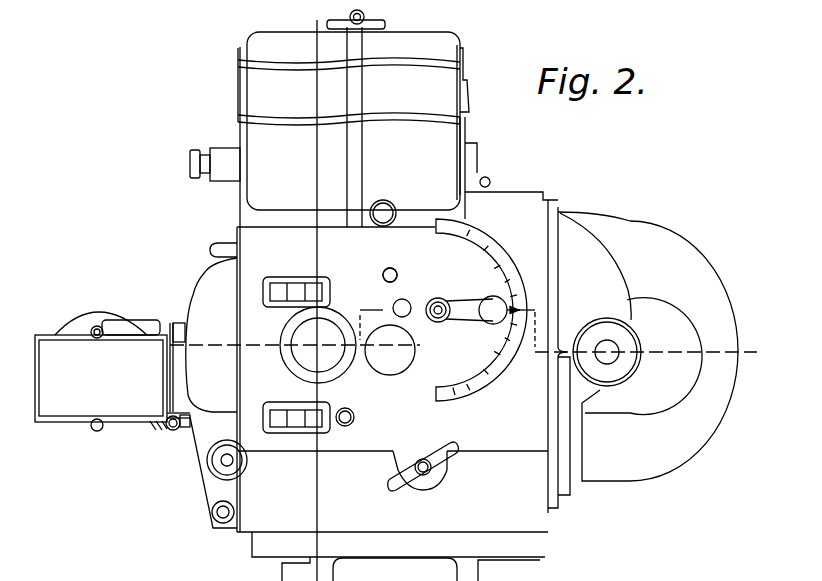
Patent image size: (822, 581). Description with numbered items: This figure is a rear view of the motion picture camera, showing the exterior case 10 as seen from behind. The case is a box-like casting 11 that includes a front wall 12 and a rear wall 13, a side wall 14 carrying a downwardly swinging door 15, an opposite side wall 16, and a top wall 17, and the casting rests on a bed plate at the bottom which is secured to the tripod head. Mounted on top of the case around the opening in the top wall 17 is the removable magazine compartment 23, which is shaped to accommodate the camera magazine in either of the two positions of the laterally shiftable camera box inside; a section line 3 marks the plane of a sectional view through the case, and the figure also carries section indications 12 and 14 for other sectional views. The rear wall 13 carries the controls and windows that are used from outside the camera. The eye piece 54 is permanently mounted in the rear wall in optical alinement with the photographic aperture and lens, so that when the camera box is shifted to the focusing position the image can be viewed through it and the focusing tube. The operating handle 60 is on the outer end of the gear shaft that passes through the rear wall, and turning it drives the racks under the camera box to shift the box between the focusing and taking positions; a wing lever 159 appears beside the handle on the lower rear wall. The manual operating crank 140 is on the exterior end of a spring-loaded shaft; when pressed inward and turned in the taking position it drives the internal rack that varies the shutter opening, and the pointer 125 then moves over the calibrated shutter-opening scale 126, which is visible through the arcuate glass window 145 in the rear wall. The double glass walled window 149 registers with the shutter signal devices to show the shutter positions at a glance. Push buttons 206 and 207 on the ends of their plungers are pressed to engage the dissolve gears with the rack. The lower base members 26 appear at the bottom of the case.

The section line 3- 3 is at (316, 20).
The exterior case of the camera 10 is at (562, 207).
The box-like casting 11 is at (528, 200).
The front wall 12 is at (177, 350).
The rear wall 13 is at (262, 244).
The side wall 14 is at (383, 277).
The downwardly swinging door 15 is at (197, 292).
The side wall 16 is at (690, 264).
The top wall 17 is at (506, 191).
The magazine compartment 23 is at (469, 82).
The base feet 26 is at (362, 556).
The eye piece 54 is at (302, 356).
The operating handle 60 is at (410, 481).
The pointer 125 is at (517, 325).
The calibrated shutter-opening scale 126 is at (516, 277).
The manual operating crank 140 is at (487, 302).
The arcuate glass window 145 is at (482, 244).
The double glass walled window 149 is at (413, 351).
The wing lever 159 is at (447, 468).
The push button 206 is at (410, 303).
The push button 207 is at (390, 268).